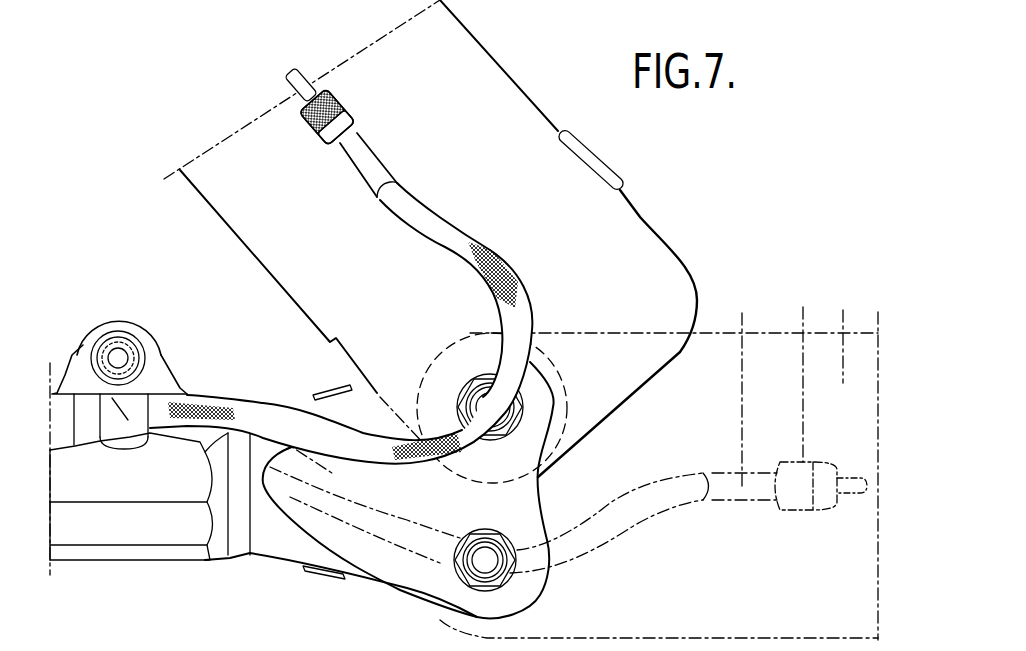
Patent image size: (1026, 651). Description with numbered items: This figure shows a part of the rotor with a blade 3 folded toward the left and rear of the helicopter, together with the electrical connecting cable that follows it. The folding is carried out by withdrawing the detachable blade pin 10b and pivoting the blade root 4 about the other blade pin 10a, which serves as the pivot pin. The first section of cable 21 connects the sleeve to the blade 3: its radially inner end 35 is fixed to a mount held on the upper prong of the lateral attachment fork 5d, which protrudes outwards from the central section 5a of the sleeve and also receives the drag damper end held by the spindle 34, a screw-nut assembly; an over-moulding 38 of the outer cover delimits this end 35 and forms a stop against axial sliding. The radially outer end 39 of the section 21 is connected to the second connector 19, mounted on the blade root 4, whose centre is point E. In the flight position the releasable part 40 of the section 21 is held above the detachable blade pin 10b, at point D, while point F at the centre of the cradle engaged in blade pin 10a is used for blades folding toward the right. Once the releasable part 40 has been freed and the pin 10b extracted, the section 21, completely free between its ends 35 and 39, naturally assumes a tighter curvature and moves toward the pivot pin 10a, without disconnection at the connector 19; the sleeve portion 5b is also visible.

The blade 3 is at (440, 55).
The blade root 4 is at (640, 272).
The second connector 19 is at (303, 115).
The first section of cable 21 is at (502, 252).
The end of first section 39 is at (363, 155).
The spindle 34 is at (122, 354).
The end of first section 35 is at (83, 345).
The attachment fork 5d is at (163, 378).
The over-moulding 38 is at (183, 393).
The central section of the sleeve 5a is at (172, 552).
The caliper body arm 5b is at (405, 568).
The releasable part 40 is at (483, 562).
The blade pin 10a is at (523, 420).
The blade pin 10b is at (523, 563).
The point E is at (315, 98).
The point F is at (486, 411).
The point D is at (481, 556).